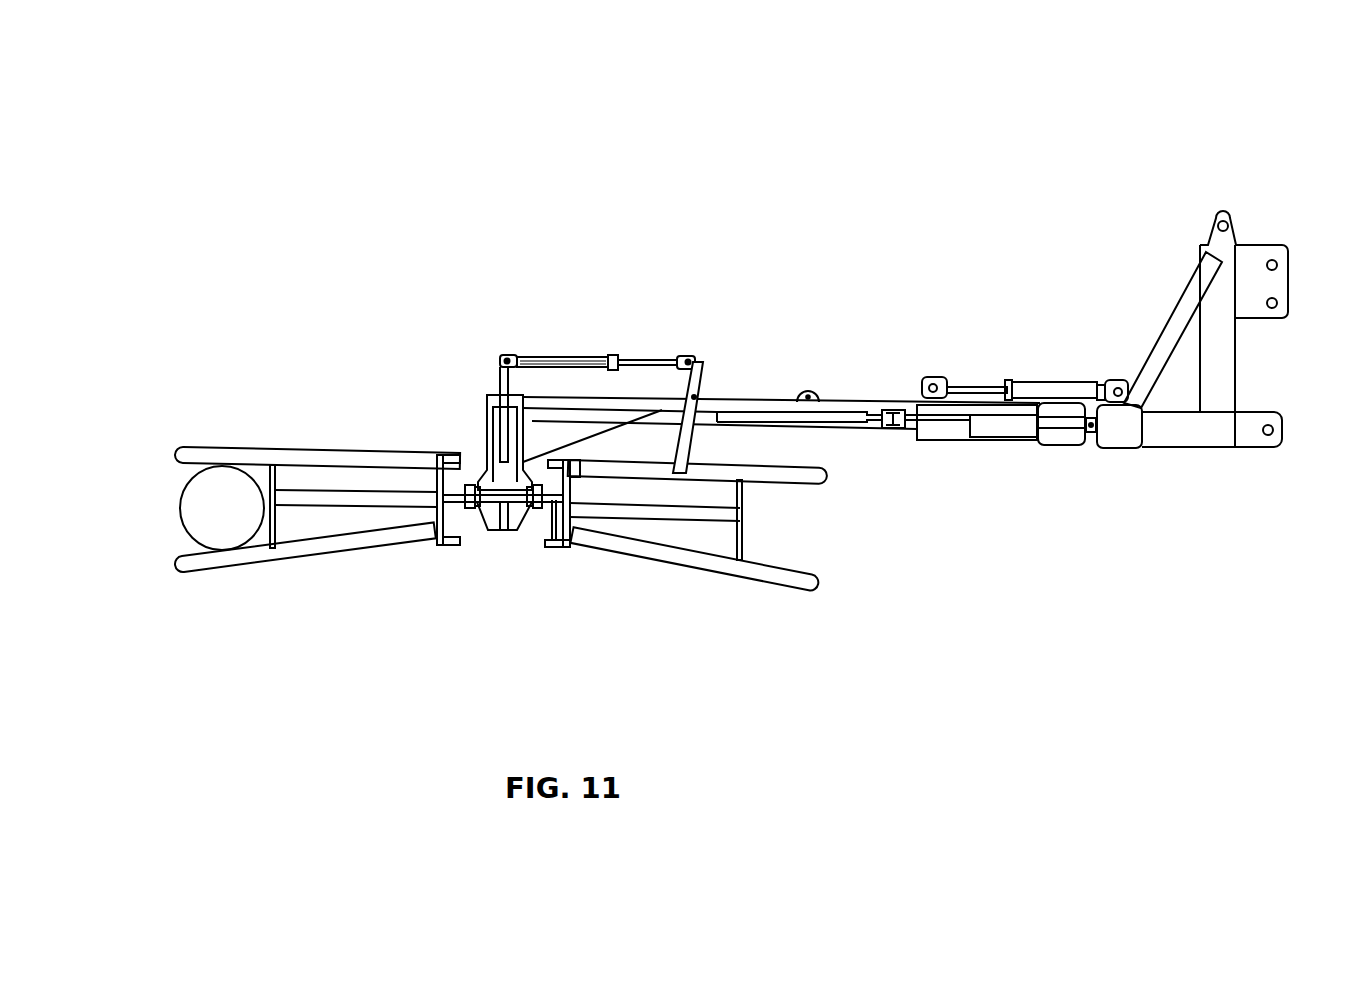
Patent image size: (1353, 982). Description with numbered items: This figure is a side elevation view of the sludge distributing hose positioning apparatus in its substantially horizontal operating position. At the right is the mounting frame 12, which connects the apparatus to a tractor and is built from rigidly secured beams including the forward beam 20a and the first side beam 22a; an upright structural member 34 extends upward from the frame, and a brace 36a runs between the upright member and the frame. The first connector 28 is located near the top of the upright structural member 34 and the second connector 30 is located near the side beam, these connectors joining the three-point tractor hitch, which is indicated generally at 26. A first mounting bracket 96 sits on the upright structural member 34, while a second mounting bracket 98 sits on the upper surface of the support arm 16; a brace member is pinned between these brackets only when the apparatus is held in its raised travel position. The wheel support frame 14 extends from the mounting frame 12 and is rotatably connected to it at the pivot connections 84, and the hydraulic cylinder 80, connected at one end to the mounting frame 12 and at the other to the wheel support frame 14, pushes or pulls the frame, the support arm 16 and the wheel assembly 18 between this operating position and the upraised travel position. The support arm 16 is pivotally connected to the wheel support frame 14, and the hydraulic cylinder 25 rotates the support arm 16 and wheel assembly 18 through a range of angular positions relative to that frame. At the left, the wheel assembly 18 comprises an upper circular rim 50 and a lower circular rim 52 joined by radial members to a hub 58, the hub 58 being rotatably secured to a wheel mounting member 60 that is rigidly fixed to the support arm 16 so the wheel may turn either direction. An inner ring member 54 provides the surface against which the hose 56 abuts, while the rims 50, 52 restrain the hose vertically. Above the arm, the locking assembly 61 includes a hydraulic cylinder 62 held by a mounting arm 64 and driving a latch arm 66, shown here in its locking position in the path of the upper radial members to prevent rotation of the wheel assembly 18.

The mounting frame 12 is at (1217, 336).
The wheel support frame 14 is at (917, 407).
The support arm 16 is at (800, 403).
The wheel assembly 18 is at (378, 400).
The forward beam 20a is at (1115, 445).
The first side beam 22a is at (1186, 437).
The hydraulic cylinder 25 is at (1000, 428).
The hitch assembly 26 is at (1255, 274).
The first connector 28 is at (1263, 255).
The second connector 30 is at (1260, 420).
The upright structural member 34 is at (1220, 363).
The brace 36a is at (1173, 323).
The upper circular rim 50 is at (289, 460).
The lower circular rim 52 is at (302, 553).
The inner ring member 54 is at (742, 540).
The hose 56 is at (170, 483).
The hub 58 is at (433, 520).
The wheel mounting member 60 is at (483, 410).
The locking assembly 61 is at (614, 320).
The hydraulic cylinder 62 is at (547, 357).
The mounting arm 64 is at (500, 383).
The latch arm 66 is at (705, 383).
The hydraulic cylinder 80 is at (1035, 382).
The pivot connections 84 is at (1088, 432).
The first mounting bracket 96 is at (1218, 215).
The second mounting bracket 98 is at (813, 393).